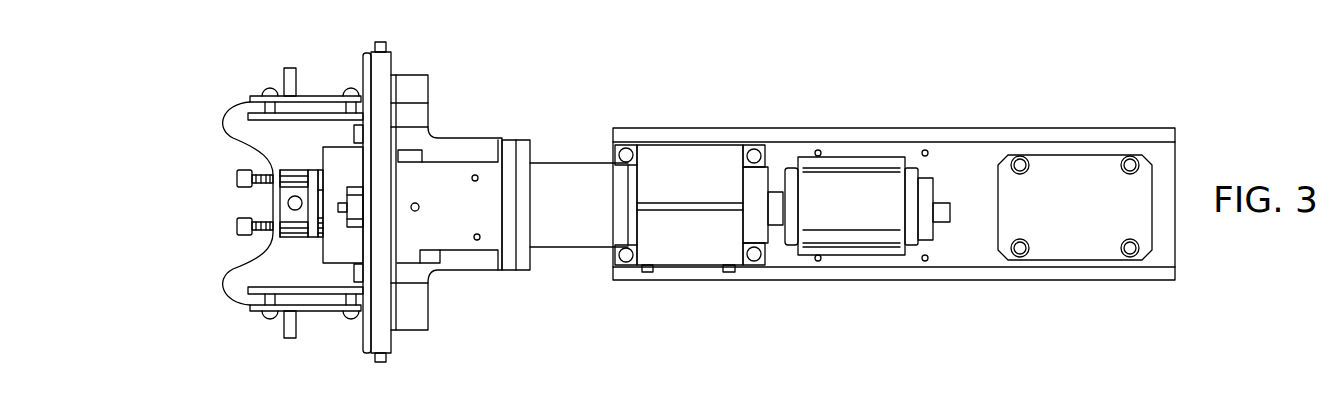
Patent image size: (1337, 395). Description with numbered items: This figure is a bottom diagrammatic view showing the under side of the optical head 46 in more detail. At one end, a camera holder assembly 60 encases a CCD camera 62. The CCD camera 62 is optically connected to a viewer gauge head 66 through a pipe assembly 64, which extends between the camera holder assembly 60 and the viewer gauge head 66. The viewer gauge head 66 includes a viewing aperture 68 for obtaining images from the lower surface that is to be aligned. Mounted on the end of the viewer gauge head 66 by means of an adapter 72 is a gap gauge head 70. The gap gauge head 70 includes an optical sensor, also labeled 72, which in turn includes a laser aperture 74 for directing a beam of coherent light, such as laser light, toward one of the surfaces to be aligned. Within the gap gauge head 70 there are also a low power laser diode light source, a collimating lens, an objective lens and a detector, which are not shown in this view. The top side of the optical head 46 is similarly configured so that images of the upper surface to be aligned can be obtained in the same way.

The optical head 46 is at (615, 105).
The camera holder assembly 60 is at (1038, 130).
The CCD camera 62 is at (850, 173).
The pipe assembly 64 is at (577, 250).
The viewer gauge head 66 is at (462, 263).
The viewing aperture 68 is at (420, 207).
The gap gauge head 70 is at (225, 85).
The adapter 72 is at (380, 70).
The laser aperture 74 is at (290, 210).